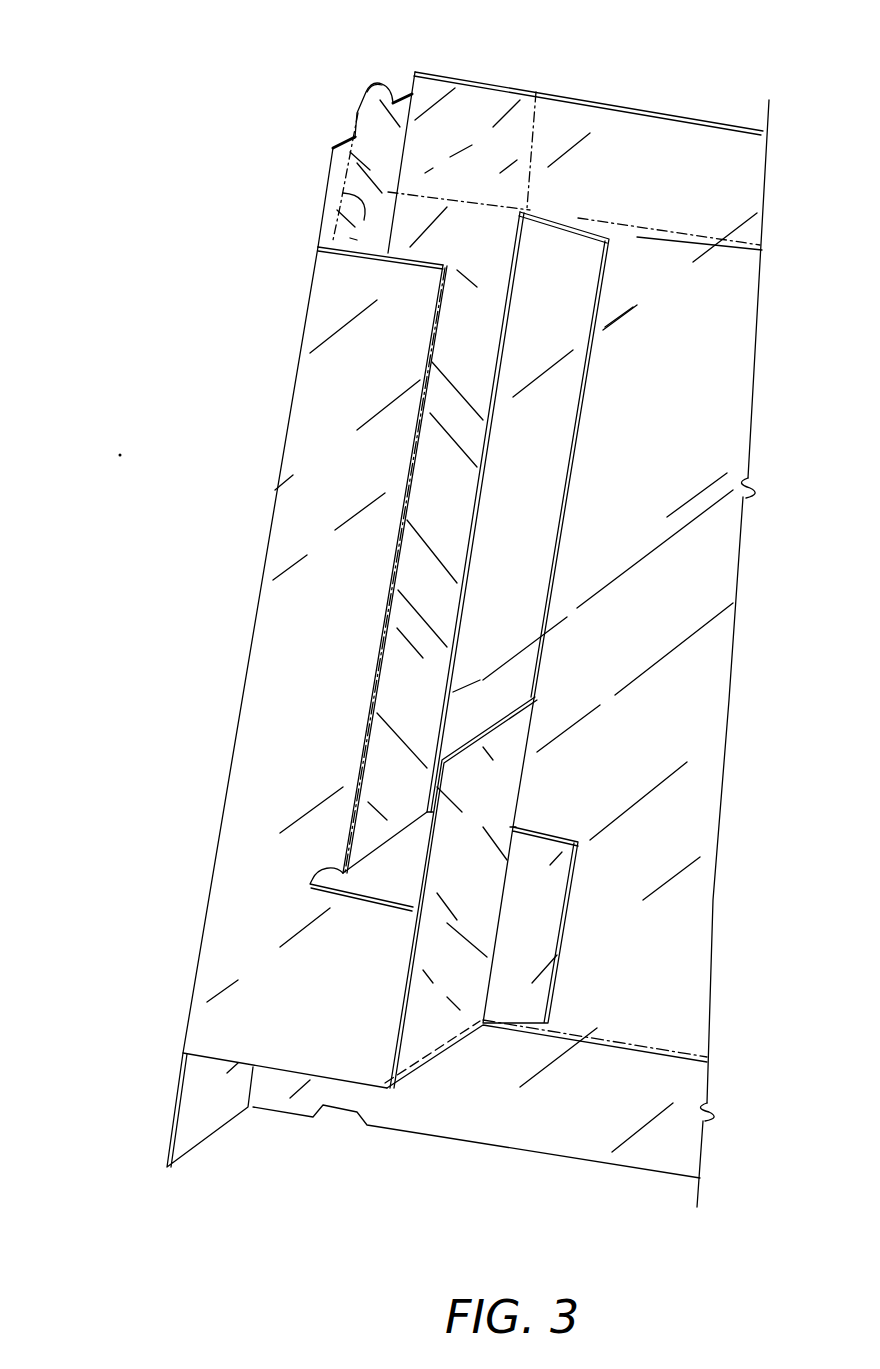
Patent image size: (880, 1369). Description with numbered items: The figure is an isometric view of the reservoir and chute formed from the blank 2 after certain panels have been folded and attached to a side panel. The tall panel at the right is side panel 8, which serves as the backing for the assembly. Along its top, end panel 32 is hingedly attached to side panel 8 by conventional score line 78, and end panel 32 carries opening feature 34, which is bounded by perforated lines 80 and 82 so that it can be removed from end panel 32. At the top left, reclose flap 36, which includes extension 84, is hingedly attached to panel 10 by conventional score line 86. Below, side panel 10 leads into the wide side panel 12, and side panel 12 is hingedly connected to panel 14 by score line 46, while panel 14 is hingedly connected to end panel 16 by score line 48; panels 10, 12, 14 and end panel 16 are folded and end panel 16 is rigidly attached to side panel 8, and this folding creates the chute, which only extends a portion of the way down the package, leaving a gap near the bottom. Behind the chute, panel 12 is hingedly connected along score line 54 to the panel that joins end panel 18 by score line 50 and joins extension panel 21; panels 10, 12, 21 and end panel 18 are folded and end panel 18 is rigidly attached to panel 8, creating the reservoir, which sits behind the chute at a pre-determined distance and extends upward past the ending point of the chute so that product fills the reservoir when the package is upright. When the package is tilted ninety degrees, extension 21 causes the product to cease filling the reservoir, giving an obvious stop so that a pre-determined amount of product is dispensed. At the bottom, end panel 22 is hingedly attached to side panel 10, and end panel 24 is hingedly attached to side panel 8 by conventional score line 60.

The blank 2 is at (126, 782).
The side panel 8 is at (642, 502).
The side panel 10 is at (330, 233).
The side panel 12 is at (348, 483).
The side panel 14 is at (461, 480).
The end panel 16 is at (541, 483).
The end panel 18 is at (543, 960).
The extension panel 21 is at (483, 853).
The end panel 22 is at (230, 1110).
The end panel 24 is at (578, 1120).
The end panel 32 is at (650, 172).
The opening feature 34 is at (482, 134).
The reclose flap 36 is at (382, 157).
The score line 46 is at (430, 342).
The score line 48 is at (510, 343).
The score line 50 is at (507, 895).
The score line 54 is at (397, 987).
The score line 60 is at (667, 1047).
The score line 78 is at (640, 230).
The perforated line 80 is at (540, 116).
The perforated line 82 is at (447, 173).
The extension 84 is at (372, 90).
The score line 86 is at (343, 193).